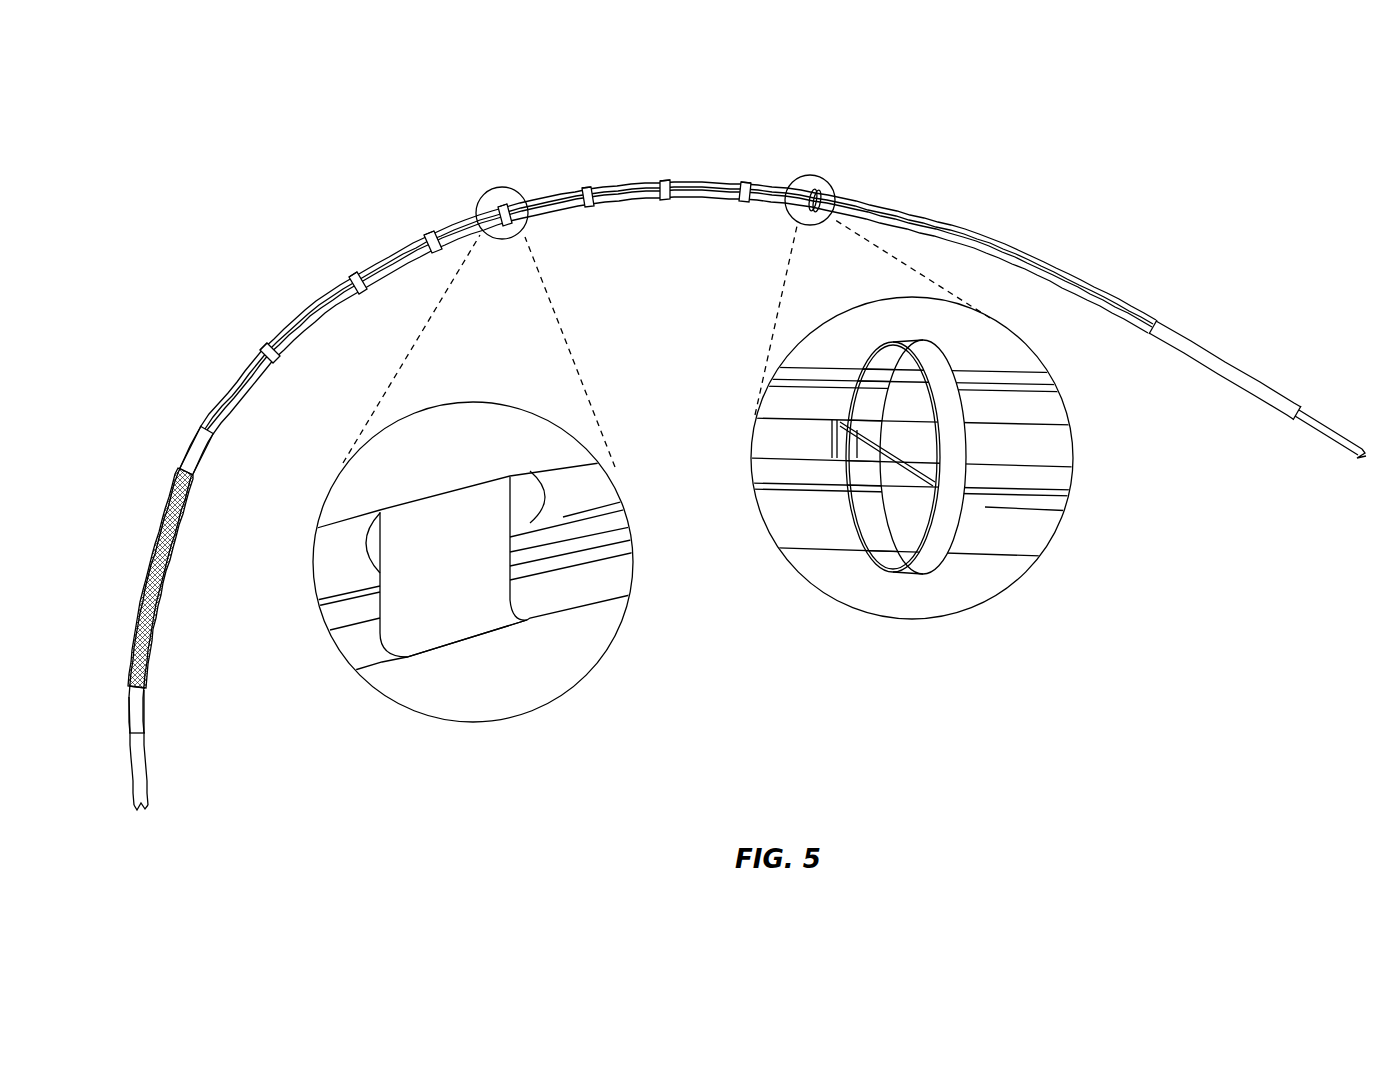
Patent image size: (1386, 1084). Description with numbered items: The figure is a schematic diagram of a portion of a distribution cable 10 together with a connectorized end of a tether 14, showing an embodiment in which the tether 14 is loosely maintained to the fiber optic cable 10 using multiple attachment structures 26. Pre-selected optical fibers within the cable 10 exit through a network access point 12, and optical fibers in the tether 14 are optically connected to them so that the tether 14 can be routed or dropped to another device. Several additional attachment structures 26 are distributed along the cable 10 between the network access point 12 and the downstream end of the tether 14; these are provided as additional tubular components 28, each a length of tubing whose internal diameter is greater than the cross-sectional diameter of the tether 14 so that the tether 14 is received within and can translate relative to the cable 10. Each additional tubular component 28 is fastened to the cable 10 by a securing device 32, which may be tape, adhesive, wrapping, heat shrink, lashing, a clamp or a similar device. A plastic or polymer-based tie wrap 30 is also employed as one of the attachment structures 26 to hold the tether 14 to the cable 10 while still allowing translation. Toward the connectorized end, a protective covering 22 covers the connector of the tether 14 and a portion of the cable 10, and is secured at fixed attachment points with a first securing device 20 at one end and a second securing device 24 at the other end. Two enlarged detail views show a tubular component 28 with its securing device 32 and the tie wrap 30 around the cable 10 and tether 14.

The distribution cable 10 is at (241, 408).
The network access point 12 is at (1201, 356).
The tether 14 is at (238, 386).
The securing device 20 is at (193, 451).
The protective covering 22 is at (149, 600).
The securing device 24 is at (138, 714).
The additional attachment structures 26 is at (498, 169).
The additional tubular components 28 is at (600, 205).
The tie wrap 30 is at (824, 183).
The securing device 32 is at (587, 190).